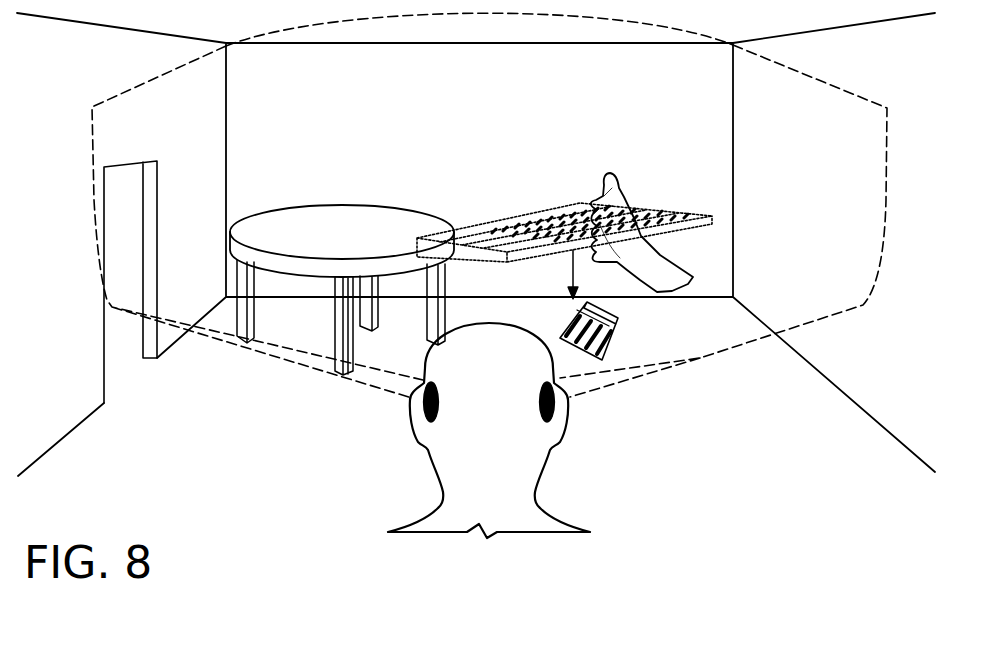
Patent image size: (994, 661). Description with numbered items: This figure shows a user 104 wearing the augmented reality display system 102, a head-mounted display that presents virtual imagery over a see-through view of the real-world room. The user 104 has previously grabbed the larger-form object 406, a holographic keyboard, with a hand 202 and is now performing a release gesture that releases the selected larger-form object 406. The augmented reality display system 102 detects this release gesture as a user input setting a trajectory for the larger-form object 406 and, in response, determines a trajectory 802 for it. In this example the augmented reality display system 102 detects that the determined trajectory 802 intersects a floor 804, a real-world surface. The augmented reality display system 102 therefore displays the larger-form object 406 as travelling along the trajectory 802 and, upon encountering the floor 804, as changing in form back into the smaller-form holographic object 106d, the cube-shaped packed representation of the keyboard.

The augmented reality display system 102 is at (558, 388).
The user 104 is at (508, 518).
The smaller-form holographic object 106d is at (602, 361).
The hand 202 is at (664, 270).
The larger-form object 406 is at (544, 211).
The trajectory 802 is at (558, 274).
The floor 804 is at (318, 429).